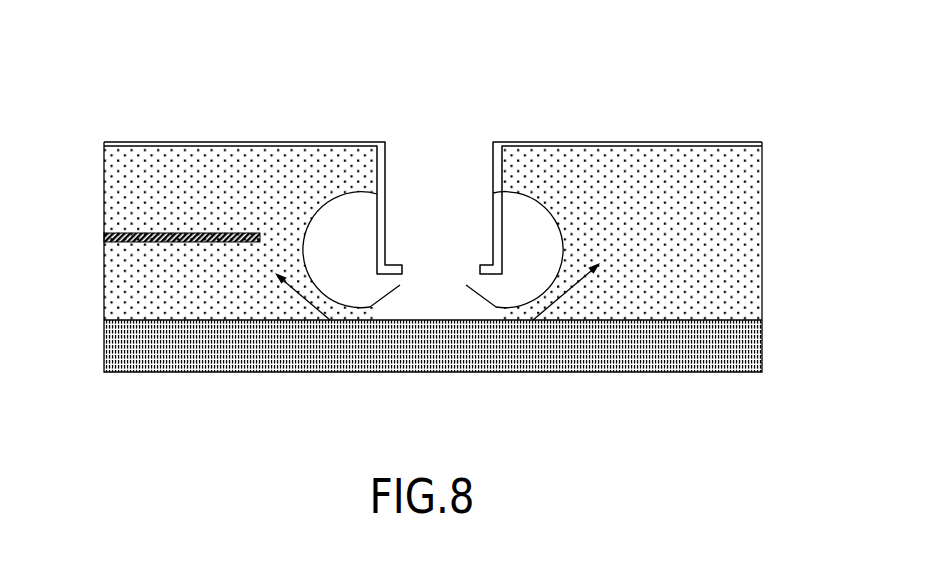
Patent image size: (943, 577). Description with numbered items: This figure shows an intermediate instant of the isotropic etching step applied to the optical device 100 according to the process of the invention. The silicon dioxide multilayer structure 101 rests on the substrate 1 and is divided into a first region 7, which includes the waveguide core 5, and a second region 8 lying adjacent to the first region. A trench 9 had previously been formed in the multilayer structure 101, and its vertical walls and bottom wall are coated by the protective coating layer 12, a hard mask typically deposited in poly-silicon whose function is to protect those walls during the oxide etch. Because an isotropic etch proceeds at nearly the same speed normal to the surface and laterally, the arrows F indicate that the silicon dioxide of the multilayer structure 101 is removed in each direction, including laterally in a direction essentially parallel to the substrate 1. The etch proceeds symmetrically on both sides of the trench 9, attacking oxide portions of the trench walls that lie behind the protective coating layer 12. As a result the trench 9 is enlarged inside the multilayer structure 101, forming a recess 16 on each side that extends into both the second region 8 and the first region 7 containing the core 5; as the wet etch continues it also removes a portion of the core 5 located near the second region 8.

The substrate 1 is at (115, 346).
The core 5 is at (104, 238).
The first region 7 is at (108, 382).
The second region 8 is at (758, 138).
The trench 9 is at (447, 212).
The protective coating layer 12 is at (500, 140).
The recess 16 is at (349, 246).
The optical device 100 is at (134, 465).
The multilayer structure 101 is at (775, 152).
The arrows F is at (353, 308).